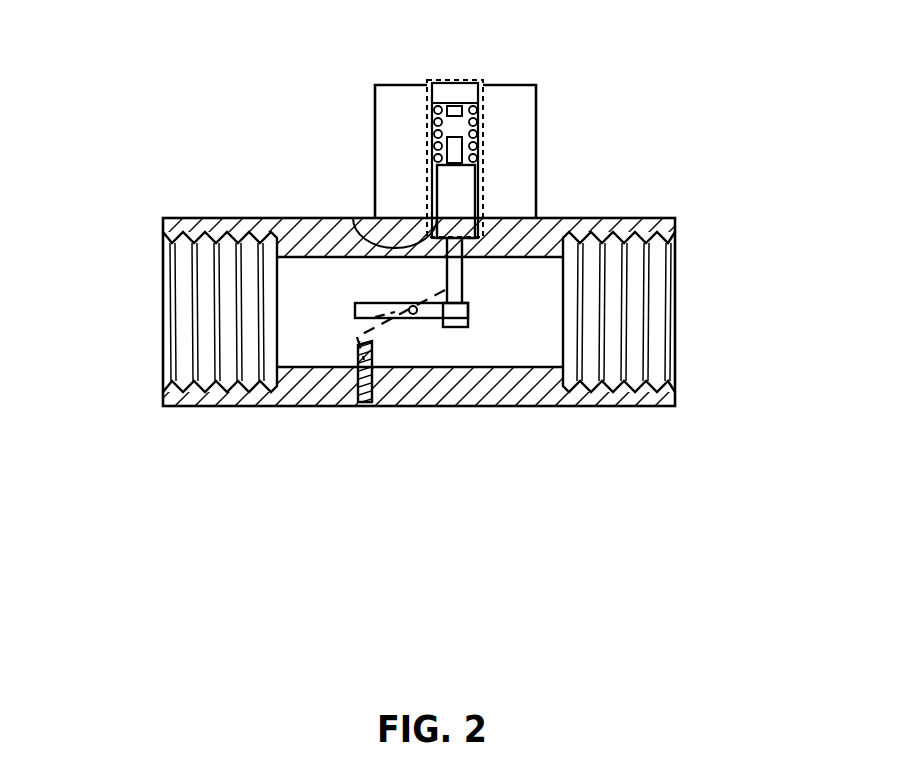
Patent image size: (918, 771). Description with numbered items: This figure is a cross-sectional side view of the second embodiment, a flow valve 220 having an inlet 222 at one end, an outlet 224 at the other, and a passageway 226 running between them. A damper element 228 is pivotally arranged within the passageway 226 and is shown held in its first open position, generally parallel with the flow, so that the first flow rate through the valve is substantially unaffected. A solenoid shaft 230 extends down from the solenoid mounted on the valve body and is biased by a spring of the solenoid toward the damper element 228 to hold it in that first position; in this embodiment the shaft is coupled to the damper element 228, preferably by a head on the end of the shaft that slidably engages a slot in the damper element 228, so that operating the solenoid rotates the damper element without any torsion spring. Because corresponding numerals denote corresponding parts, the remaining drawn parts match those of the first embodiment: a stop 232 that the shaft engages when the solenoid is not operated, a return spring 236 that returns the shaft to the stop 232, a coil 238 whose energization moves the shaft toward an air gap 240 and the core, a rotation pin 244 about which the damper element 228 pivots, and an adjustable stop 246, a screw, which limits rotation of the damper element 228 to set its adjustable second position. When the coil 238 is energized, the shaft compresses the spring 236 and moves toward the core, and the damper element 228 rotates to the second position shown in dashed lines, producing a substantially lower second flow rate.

The flow valve 220 is at (190, 98).
The inlet 222 is at (132, 307).
The outlet 224 is at (688, 313).
The passageway 226 is at (313, 358).
The damper element 228 is at (450, 328).
The solenoid shaft 230 is at (530, 212).
The sensor opening 232 is at (352, 220).
The coil 236 is at (427, 127).
The housing 238 is at (528, 130).
The sensor tube 240 is at (487, 107).
The pivot 244 is at (415, 318).
The post 246 is at (361, 398).